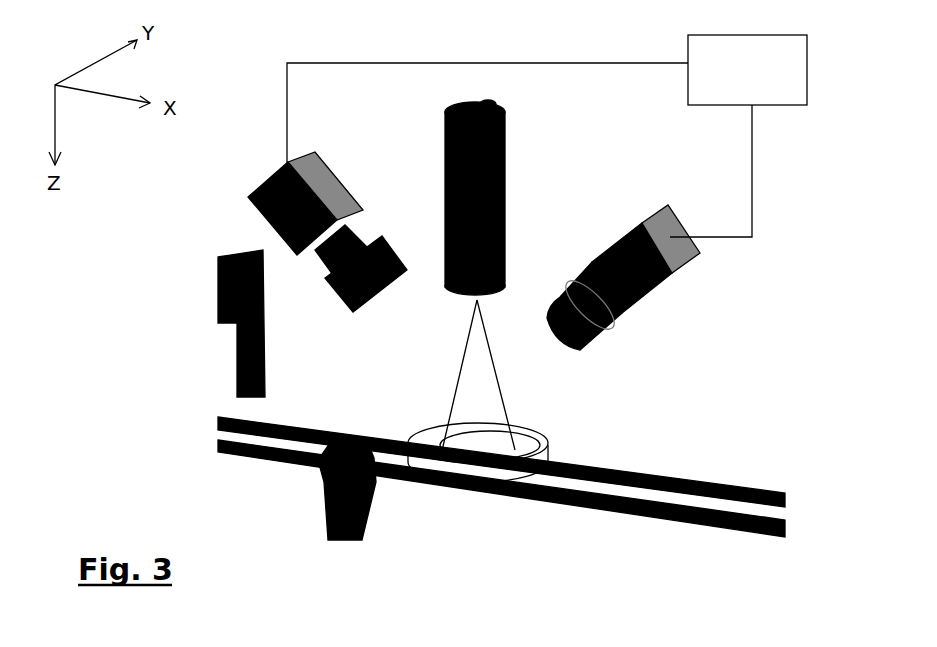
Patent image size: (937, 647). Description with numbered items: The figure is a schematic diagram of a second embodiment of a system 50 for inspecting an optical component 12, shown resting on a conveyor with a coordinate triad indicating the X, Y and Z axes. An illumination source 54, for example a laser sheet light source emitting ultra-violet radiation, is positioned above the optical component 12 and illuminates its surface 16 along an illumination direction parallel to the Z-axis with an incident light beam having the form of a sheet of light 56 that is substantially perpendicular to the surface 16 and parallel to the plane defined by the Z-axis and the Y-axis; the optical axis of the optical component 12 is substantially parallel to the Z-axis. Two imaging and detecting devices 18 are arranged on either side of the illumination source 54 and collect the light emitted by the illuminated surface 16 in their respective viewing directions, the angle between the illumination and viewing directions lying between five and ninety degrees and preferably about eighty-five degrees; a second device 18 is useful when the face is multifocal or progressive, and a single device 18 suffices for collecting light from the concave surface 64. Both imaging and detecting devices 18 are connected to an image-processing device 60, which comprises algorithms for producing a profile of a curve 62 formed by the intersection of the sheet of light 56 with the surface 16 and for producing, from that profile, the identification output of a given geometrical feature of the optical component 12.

The optical component 12 is at (490, 519).
The surface 16 is at (529, 442).
The imaging and detecting device 18 is at (272, 198).
The system 50 is at (148, 236).
The illumination source 54 is at (455, 130).
The sheet of light 56 is at (478, 385).
The image-processing device 60 is at (547, 136).
The curve 62 is at (465, 438).
The concave surface 64 is at (455, 487).